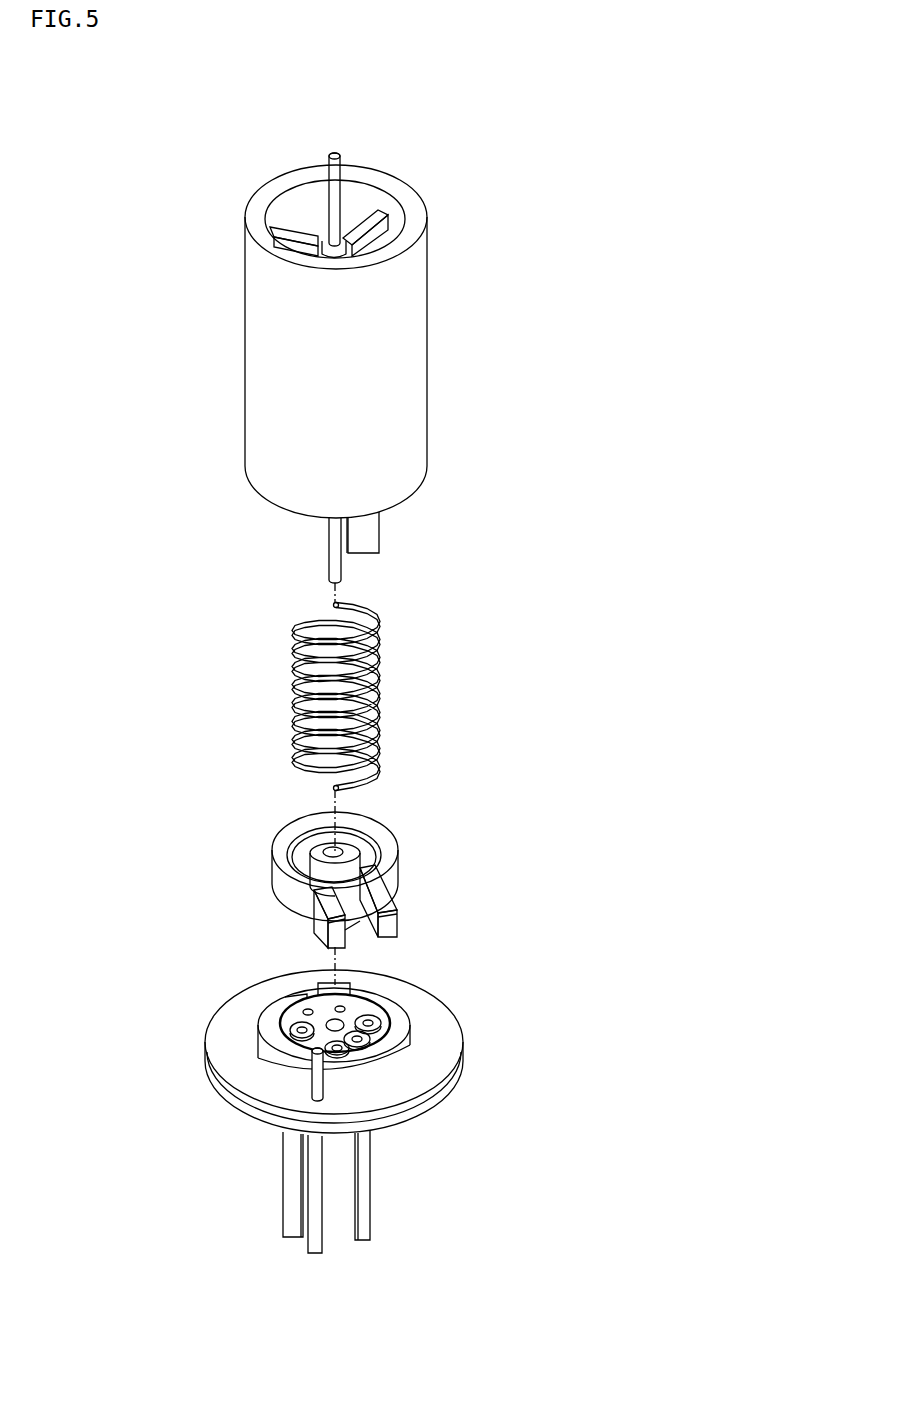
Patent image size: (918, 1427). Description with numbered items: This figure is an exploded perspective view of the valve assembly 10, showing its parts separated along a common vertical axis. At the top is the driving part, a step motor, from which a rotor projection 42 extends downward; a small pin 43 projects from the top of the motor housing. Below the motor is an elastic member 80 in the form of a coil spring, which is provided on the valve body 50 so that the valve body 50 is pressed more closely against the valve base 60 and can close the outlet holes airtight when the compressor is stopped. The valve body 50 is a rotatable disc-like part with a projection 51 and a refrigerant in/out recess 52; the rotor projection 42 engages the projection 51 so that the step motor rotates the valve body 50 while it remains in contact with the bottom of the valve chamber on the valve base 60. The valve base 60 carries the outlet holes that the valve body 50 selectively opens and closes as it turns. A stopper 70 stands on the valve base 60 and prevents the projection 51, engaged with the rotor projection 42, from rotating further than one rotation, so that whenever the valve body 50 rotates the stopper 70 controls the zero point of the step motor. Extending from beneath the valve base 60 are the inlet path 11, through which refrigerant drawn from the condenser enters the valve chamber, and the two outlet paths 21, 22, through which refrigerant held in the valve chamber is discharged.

The valve assembly 10 is at (498, 146).
The upper pin 43 is at (338, 152).
The rotor projection 42 is at (365, 541).
The elastic member 80 is at (380, 667).
The valve body 50 is at (400, 818).
The projection 51 is at (390, 925).
The refrigerant in/out recess 52 is at (360, 935).
The valve base 60 is at (424, 1048).
The stopper 70 is at (312, 1081).
The inlet path 11 is at (292, 1175).
The outlet path 21 is at (315, 1213).
The outlet path 22 is at (365, 1159).